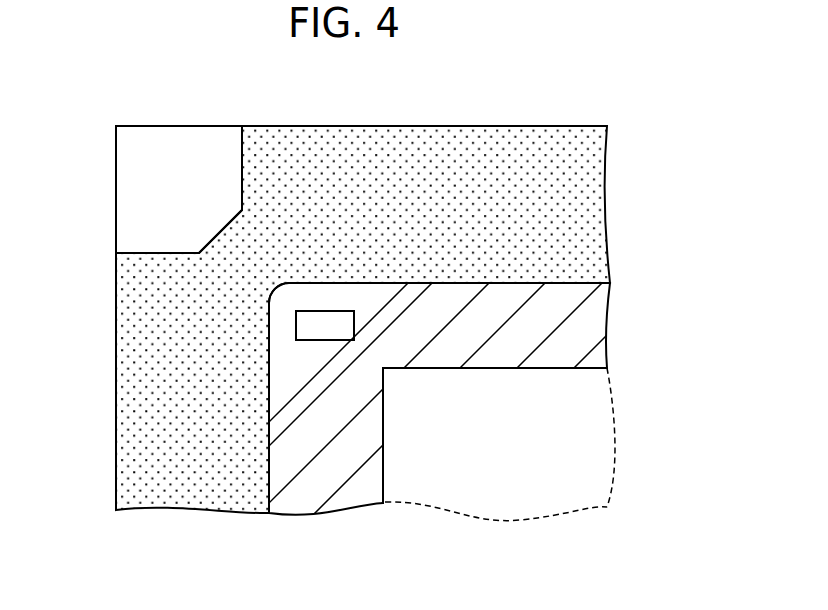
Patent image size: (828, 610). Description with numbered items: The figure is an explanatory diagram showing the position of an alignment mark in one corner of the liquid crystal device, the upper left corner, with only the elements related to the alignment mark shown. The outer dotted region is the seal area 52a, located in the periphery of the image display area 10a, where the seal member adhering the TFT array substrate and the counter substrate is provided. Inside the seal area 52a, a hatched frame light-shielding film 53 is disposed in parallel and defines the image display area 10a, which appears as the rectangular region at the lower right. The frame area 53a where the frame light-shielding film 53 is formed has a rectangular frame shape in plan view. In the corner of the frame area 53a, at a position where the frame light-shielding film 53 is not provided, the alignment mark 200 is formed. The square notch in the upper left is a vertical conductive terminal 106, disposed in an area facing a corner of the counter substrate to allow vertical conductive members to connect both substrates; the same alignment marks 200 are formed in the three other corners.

The seal area 52a is at (486, 167).
The vertical conductive terminal 106 is at (140, 193).
The frame light-shielding film 53 is at (590, 328).
The frame area 53a is at (557, 293).
The image display area 10a is at (617, 446).
The alignment mark 200 is at (325, 329).